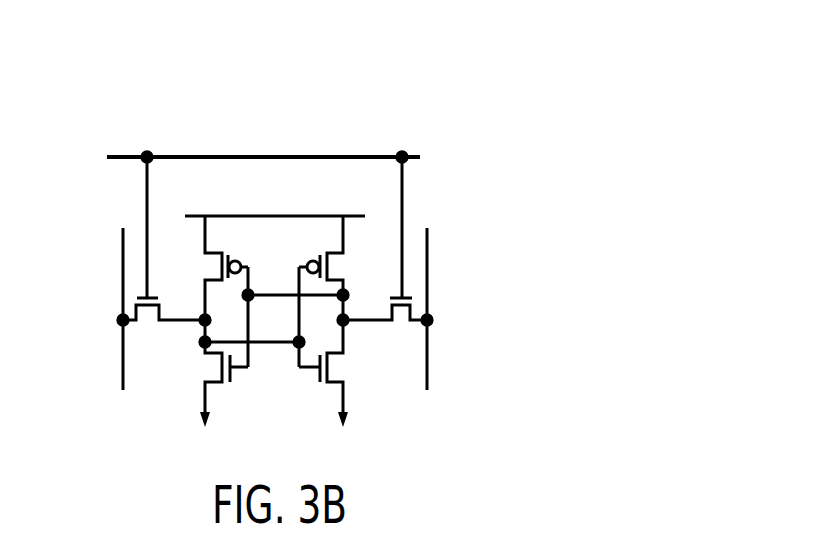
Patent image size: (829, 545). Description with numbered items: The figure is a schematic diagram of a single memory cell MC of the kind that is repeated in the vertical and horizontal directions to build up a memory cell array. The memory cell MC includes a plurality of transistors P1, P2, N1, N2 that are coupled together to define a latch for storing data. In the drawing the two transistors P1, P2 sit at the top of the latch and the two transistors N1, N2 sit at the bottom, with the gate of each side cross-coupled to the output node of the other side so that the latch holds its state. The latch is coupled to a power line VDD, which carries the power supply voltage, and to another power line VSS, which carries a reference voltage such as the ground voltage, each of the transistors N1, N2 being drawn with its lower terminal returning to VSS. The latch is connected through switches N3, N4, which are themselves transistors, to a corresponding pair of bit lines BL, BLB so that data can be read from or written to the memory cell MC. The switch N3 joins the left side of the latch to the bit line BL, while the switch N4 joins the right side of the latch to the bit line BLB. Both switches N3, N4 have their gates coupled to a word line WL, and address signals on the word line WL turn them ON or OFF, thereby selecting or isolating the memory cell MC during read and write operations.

The word line WL is at (263, 142).
The memory cell MC is at (387, 126).
The bit line BL is at (122, 292).
The bit line BLB is at (432, 292).
The power line VDD is at (275, 200).
The power line VSS is at (275, 447).
The transistor P1 is at (262, 291).
The transistor P2 is at (287, 291).
The transistor N1 is at (215, 373).
The transistor N2 is at (334, 373).
The switch N3 is at (164, 255).
The switch N4 is at (385, 255).